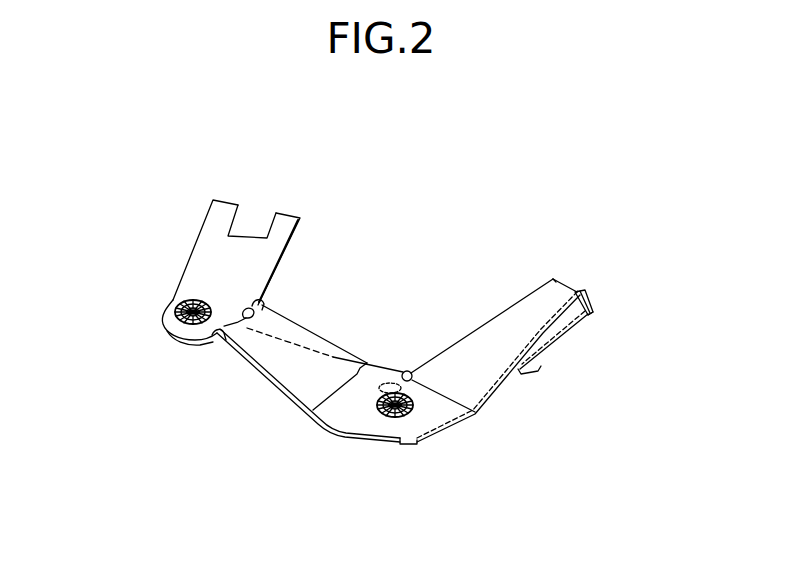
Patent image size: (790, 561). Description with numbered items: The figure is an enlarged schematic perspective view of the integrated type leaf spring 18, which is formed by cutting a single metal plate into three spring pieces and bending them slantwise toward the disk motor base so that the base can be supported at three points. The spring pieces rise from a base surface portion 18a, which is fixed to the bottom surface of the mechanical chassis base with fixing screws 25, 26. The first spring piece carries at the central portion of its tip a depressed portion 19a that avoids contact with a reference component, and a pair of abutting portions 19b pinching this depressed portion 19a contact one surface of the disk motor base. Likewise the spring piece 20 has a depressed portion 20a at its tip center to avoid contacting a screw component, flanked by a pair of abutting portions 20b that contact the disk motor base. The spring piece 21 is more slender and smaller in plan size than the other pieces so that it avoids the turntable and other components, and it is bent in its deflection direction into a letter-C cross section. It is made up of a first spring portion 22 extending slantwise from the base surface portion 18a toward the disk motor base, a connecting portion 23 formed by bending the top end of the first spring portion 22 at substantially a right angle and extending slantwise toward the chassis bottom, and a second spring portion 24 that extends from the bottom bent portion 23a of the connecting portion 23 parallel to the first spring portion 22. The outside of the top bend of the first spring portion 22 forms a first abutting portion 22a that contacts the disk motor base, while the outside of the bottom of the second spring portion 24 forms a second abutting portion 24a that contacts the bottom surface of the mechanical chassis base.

The integrated type leaf spring 18 is at (325, 328).
The base surface portion 18a is at (437, 413).
The depressed portion 19a is at (248, 236).
The abutting portions 19b is at (222, 197).
The spring piece 20 is at (280, 363).
The depressed portion 20a is at (243, 312).
The abutting portions 20b is at (258, 304).
The spring piece 21 is at (457, 363).
The first spring portion 22 is at (503, 367).
The first abutting portion 22a is at (555, 280).
The connecting portion 23 is at (583, 297).
The bottom bent portion 23a is at (593, 313).
The second spring portion 24 is at (553, 337).
The second abutting portion 24a is at (525, 370).
The fixing screw 25 is at (175, 304).
The fixing screw 26 is at (390, 420).